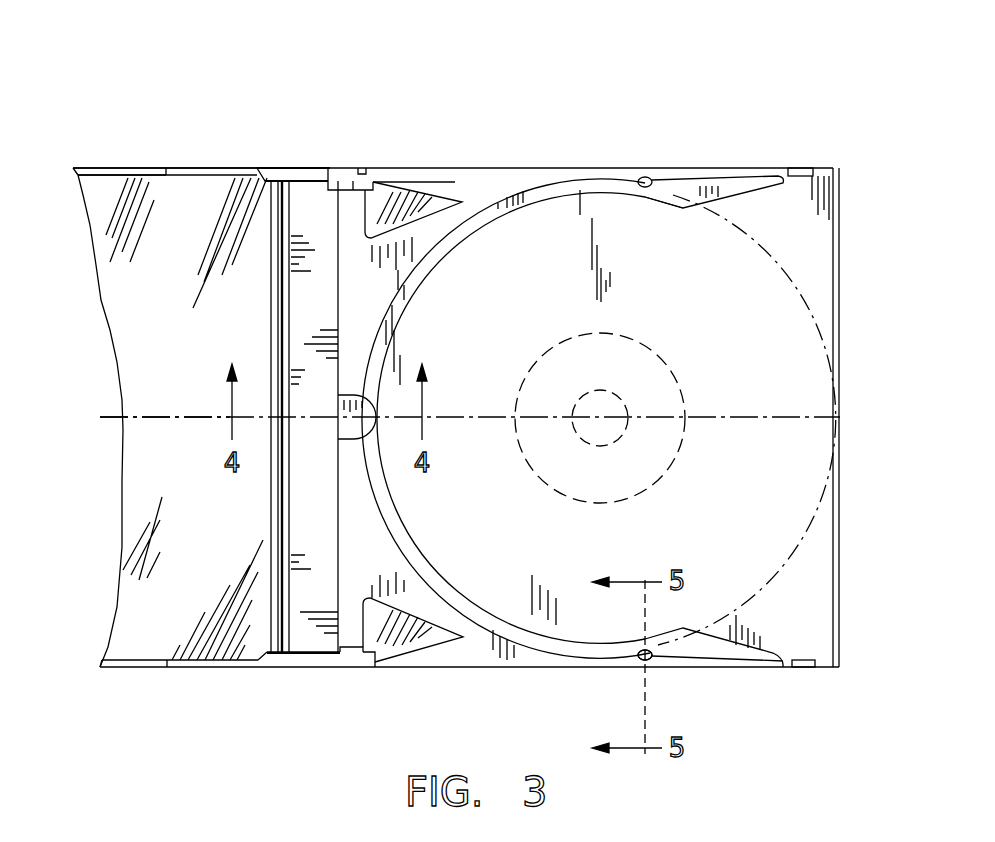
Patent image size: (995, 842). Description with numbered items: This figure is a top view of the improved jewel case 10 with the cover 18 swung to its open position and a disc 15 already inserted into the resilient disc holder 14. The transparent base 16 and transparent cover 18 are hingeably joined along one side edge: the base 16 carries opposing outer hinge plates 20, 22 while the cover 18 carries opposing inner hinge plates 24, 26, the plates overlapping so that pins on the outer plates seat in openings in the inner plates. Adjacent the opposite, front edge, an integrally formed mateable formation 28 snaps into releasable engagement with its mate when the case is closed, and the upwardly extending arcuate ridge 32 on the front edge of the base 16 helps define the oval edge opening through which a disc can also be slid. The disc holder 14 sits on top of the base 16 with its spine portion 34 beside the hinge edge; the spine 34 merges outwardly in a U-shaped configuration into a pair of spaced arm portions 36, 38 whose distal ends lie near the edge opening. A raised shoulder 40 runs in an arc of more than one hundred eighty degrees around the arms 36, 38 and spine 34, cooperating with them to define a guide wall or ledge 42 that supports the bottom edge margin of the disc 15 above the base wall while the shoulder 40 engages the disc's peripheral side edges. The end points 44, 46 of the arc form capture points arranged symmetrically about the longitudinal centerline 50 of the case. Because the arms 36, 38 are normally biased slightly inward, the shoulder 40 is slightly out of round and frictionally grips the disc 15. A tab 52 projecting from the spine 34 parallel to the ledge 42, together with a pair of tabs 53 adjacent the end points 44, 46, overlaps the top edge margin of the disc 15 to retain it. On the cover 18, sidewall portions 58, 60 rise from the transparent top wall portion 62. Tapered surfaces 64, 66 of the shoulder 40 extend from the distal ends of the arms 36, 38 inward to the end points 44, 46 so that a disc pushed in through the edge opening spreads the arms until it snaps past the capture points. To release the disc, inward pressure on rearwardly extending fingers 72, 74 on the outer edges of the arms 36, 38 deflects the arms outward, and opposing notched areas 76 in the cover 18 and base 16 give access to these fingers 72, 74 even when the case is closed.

The jewel case 10 is at (495, 56).
The disc holder 14 is at (483, 171).
The disc 15 is at (783, 266).
The base 16 is at (767, 194).
The cover 18 is at (133, 158).
The hinge plate 20 is at (292, 667).
The hinge plate 22 is at (287, 174).
The hinge plate 24 is at (358, 667).
The hinge plate 26 is at (342, 188).
The mateable formation 28 is at (800, 174).
The arcuate ridge 32 is at (840, 558).
The spine portion 34 is at (300, 190).
The arm portion 36 is at (522, 660).
The arm portion 38 is at (495, 177).
The raised shoulder 40 is at (560, 188).
The guide wall or ledge 42 is at (613, 187).
The end point 44 is at (652, 658).
The end point 46 is at (657, 183).
The longitudinal centerline 50 is at (118, 408).
The tab 52 is at (352, 428).
The tabs 53 is at (645, 176).
The sidewall portion 58 is at (130, 667).
The sidewall portion 60 is at (88, 170).
The top wall portion 62 is at (127, 295).
The tapered surface 64 is at (725, 667).
The tapered surface 66 is at (728, 180).
The finger 72 is at (447, 652).
The finger 74 is at (415, 178).
The notched area 76 is at (193, 171).